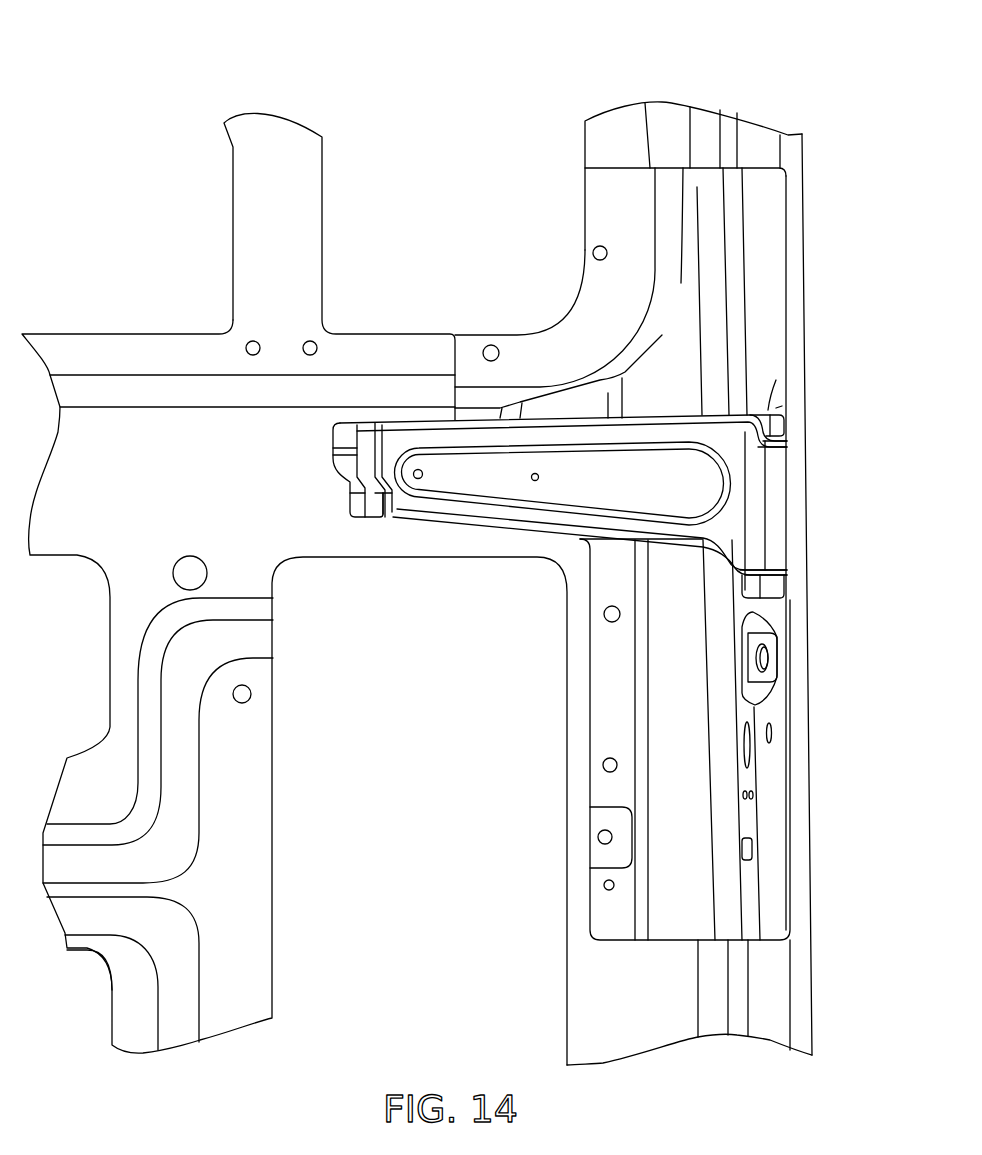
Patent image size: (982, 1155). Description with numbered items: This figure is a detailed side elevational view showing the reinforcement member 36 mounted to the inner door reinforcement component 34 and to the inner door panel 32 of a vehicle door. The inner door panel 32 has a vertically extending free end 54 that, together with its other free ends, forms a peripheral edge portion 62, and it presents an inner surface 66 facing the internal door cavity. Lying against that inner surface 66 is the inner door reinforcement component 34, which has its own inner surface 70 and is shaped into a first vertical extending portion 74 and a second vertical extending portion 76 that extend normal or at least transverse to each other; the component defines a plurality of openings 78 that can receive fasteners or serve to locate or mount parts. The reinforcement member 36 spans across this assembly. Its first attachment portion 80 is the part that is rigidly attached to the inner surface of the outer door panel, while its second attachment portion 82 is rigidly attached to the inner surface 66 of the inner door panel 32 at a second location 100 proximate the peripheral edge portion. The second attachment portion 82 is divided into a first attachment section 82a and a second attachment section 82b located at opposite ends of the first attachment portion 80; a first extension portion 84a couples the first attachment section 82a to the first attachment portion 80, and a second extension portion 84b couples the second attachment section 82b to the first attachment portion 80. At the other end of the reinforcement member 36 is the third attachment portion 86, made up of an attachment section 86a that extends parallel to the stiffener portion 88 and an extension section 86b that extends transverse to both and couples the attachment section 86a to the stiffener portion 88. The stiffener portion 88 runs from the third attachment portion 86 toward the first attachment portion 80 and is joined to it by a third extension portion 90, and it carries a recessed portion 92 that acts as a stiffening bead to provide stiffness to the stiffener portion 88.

The inner door panel 32 is at (712, 43).
The inner door reinforcement component 34 is at (718, 251).
The reinforcement member 36 is at (442, 540).
The vertically extending free end 54 is at (803, 317).
The peripheral edge portion 62 is at (793, 205).
The inner surface 66 is at (273, 433).
The inner surface 70 is at (677, 688).
The first vertical extending portion 74 is at (765, 297).
The second vertical extending portion 76 is at (677, 630).
The openings 78 is at (596, 246).
The first attachment portion 80 is at (783, 480).
The second attachment portion 82 is at (787, 423).
The first attachment section 82a is at (776, 380).
The second attachment section 82b is at (780, 587).
The first extension portion 84a is at (770, 443).
The second extension portion 84b is at (780, 572).
The third attachment portion 86 is at (348, 464).
The attachment section 86a is at (358, 510).
The extension section 86b is at (386, 523).
The stiffener portion 88 is at (505, 510).
The third extension portion 90 is at (755, 515).
The recessed portion 92 is at (648, 478).
The second location 100 is at (786, 402).